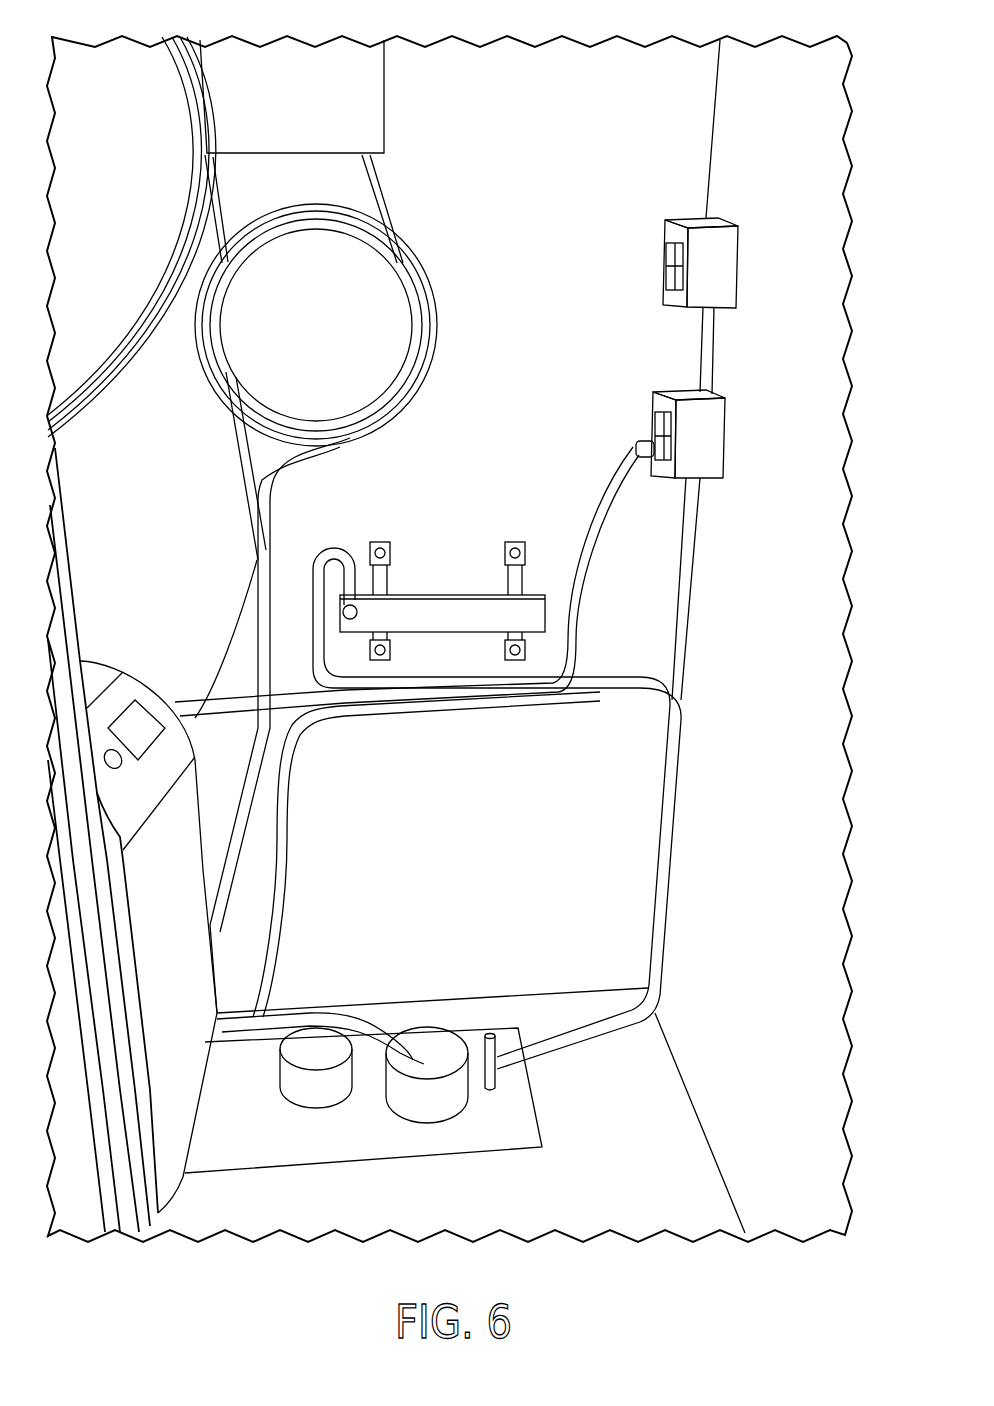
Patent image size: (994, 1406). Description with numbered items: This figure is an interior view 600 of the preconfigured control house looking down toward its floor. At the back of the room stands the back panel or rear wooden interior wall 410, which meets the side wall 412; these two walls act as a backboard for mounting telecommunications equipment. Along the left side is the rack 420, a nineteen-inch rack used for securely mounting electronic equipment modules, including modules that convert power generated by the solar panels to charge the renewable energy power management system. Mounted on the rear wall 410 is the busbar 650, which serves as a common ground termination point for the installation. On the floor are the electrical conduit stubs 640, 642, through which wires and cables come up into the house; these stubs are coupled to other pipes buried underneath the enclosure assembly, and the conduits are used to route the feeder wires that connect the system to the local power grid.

The rear wooden interior wall 410 is at (452, 60).
The side wall 412 is at (826, 773).
The 19-inch rack 420 is at (160, 1208).
The interior view 600 is at (597, 1284).
The electrical conduit stub 640 is at (315, 1098).
The electrical conduit stub 642 is at (435, 1115).
The busbar 650 is at (427, 612).